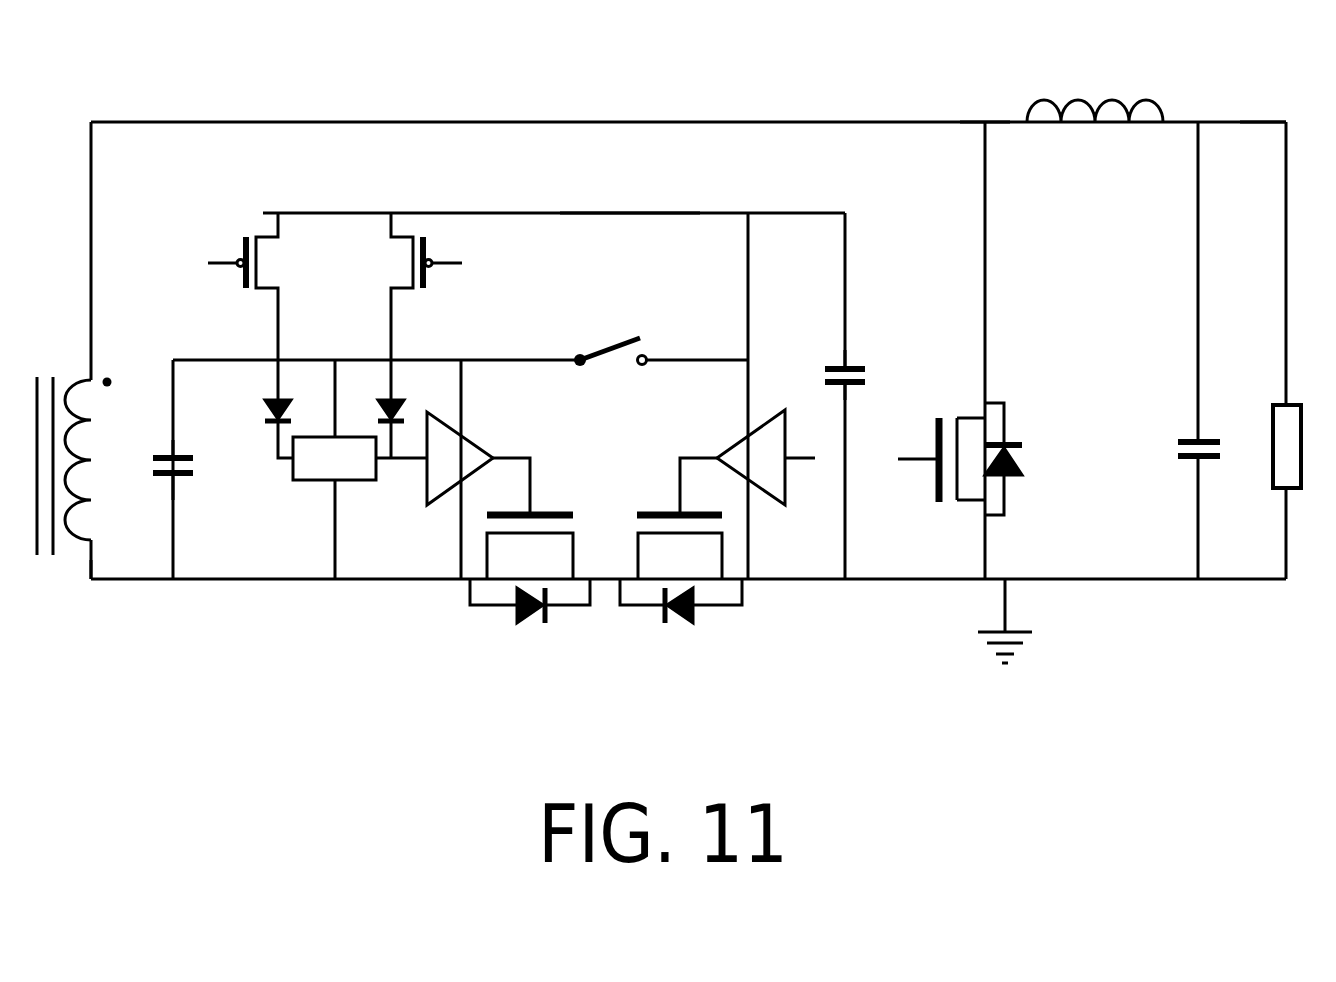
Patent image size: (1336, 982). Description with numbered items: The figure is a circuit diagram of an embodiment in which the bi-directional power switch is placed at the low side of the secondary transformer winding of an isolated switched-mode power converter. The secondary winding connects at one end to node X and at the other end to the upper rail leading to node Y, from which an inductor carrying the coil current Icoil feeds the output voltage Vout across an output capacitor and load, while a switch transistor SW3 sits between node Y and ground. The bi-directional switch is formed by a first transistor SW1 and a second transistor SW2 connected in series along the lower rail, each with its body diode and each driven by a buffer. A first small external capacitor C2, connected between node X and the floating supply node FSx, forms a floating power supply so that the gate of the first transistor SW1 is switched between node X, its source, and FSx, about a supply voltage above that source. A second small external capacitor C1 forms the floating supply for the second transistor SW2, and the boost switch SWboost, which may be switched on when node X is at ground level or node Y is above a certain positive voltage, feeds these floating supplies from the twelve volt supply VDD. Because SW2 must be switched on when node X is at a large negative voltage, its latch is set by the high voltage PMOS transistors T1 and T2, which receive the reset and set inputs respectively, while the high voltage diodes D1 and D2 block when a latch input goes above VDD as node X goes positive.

The high voltage PMOS transistor T1 is at (279, 306).
The high voltage PMOS transistor T2 is at (392, 306).
The reset input reset is at (200, 245).
The set input set is at (453, 245).
The high voltage diode D1 is at (297, 411).
The high voltage diode D2 is at (412, 411).
The element latch is at (359, 458).
The second small external capacitor C1 is at (829, 355).
The first small external capacitor C2 is at (156, 457).
The first transistor SW1 is at (681, 567).
The second transistor SW2 is at (530, 567).
The switch transistor SW3 is at (1005, 350).
The boost switch SWboost is at (652, 328).
The floating supply node FSx is at (109, 425).
The node X is at (104, 599).
The node Y is at (950, 101).
The supply voltage VDD is at (587, 189).
The coil current Icoil is at (1122, 73).
The output voltage Vout is at (1275, 100).